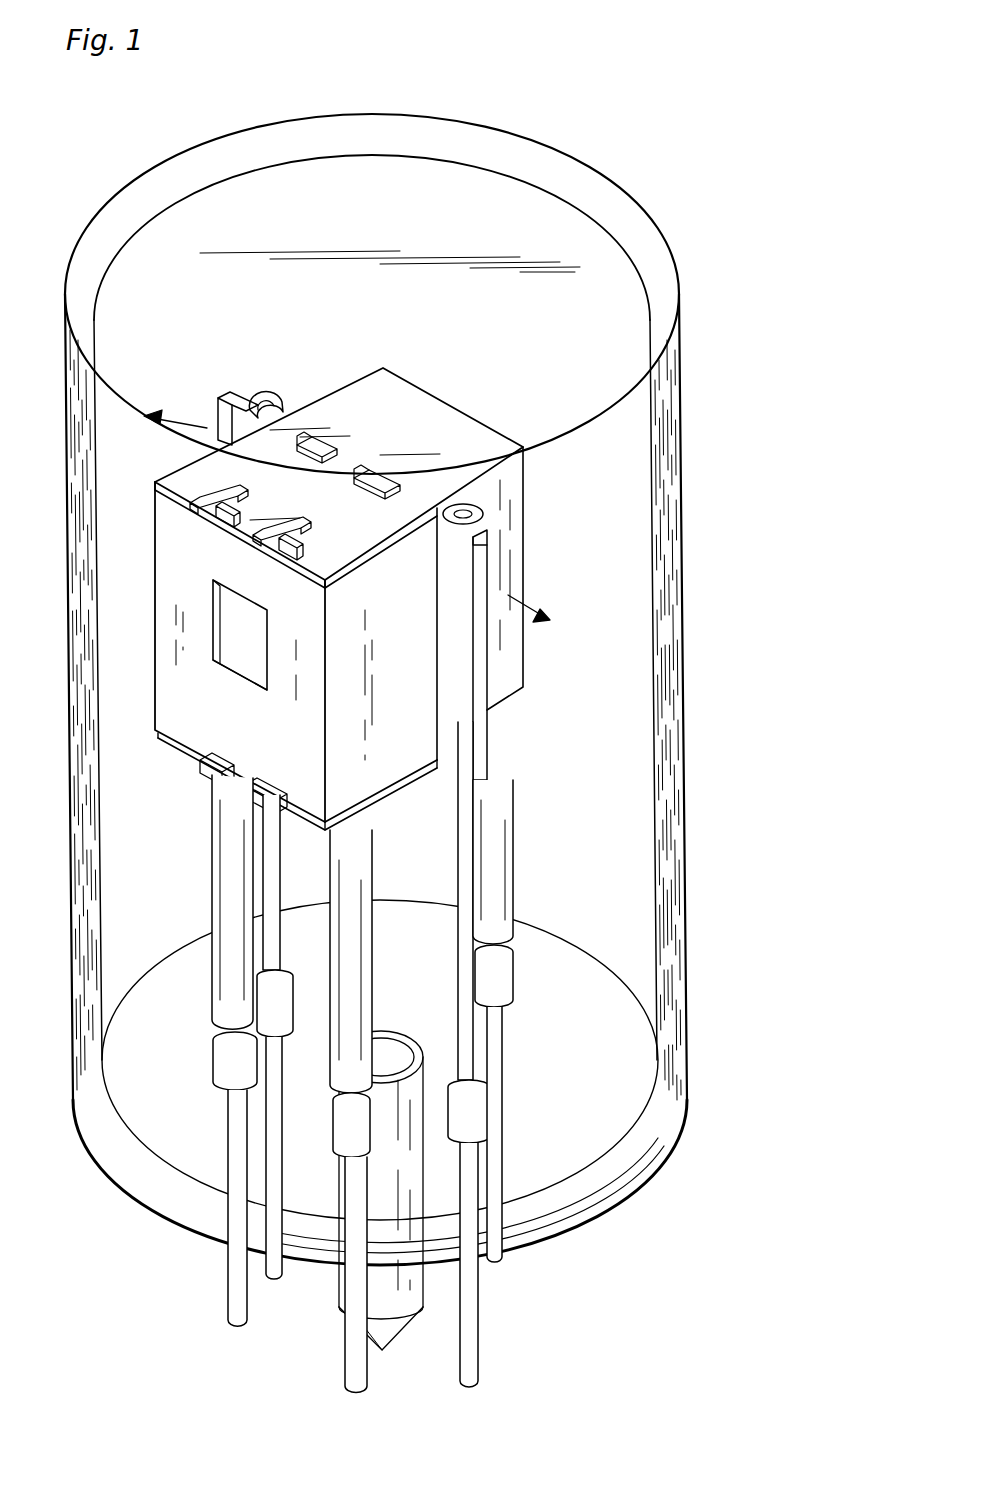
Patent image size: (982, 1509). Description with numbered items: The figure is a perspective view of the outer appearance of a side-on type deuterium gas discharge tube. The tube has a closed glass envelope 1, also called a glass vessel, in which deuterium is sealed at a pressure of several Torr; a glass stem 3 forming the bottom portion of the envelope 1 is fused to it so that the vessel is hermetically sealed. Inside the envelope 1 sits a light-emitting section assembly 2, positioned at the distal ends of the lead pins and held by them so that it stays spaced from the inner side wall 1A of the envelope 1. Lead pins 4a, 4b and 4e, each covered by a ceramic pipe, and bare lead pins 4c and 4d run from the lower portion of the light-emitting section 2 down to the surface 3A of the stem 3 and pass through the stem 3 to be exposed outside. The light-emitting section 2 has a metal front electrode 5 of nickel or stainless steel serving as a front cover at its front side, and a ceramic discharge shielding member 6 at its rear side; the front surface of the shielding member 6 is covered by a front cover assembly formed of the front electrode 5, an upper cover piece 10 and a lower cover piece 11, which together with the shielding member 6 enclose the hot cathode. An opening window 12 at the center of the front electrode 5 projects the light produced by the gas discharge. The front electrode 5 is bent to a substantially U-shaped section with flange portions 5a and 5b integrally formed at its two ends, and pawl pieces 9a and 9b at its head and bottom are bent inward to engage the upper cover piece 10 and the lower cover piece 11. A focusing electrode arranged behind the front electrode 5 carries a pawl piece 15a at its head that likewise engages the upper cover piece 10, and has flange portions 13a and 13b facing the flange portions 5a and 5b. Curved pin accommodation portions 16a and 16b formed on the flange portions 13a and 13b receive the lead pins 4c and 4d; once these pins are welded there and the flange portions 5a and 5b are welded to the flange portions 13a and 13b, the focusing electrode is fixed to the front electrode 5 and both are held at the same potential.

The envelope 1 is at (681, 476).
The inner side wall 1A is at (649, 453).
The light-emitting section assembly 2 is at (417, 580).
The glass stem 3 is at (625, 1167).
The surface of the stem 3A is at (532, 1167).
The lead pin 4a is at (233, 907).
The lead pin 4b is at (353, 868).
The lead pin 4c is at (265, 928).
The lead pin 4d is at (460, 1020).
The lead pin 4e is at (503, 892).
The front electrode 5 is at (172, 568).
The flange portion 5a is at (218, 410).
The flange portion 5b is at (480, 562).
The discharge shielding member 6 is at (513, 677).
The pawl piece 9a is at (240, 496).
The pawl piece 9b is at (262, 800).
The upper cover piece 10 is at (172, 470).
The lower cover piece 11 is at (432, 791).
The opening window 12 is at (245, 652).
The flange portion 13a is at (236, 398).
The flange portion 13b is at (487, 541).
The pawl piece 15a is at (372, 472).
The pin accommodation portion 16a is at (284, 398).
The pin accommodation portion 16b is at (480, 505).